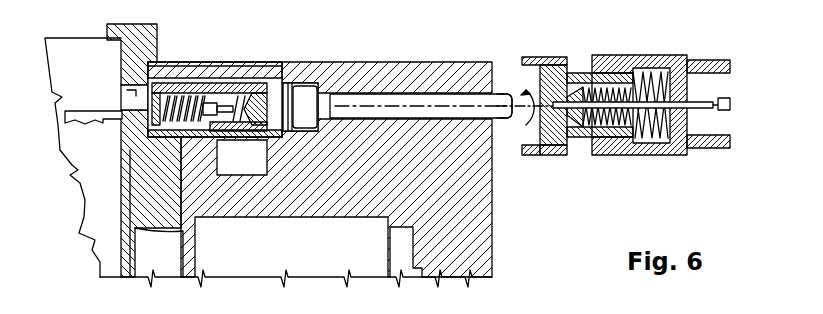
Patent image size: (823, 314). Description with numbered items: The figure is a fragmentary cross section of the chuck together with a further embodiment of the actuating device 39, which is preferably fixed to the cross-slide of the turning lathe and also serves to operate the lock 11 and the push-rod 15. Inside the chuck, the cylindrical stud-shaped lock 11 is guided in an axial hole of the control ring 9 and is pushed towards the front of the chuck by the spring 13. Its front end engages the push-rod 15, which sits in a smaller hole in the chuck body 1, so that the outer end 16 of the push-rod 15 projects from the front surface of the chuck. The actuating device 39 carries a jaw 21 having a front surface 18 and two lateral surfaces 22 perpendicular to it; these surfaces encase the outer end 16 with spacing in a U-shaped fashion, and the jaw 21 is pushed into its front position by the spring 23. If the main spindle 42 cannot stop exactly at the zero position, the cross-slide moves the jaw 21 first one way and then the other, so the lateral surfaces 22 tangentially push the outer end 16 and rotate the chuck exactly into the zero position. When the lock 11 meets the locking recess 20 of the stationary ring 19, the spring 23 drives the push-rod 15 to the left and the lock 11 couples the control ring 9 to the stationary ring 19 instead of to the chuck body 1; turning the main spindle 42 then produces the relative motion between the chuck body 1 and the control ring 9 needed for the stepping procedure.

The chuck body 1 is at (352, 67).
The control ring 9 is at (190, 155).
The lock 11 is at (280, 104).
The spring 13 is at (242, 98).
The push-rod 15 is at (427, 100).
The outer end 16 is at (503, 98).
The front surface 18 is at (542, 150).
The stationary ring 19 is at (152, 43).
The locking recess 20 is at (130, 97).
The jaw 21 is at (558, 63).
The lateral surfaces 22 is at (527, 57).
The spring 23 is at (653, 88).
The actuating device 39 is at (660, 106).
The main spindle 42 is at (85, 135).